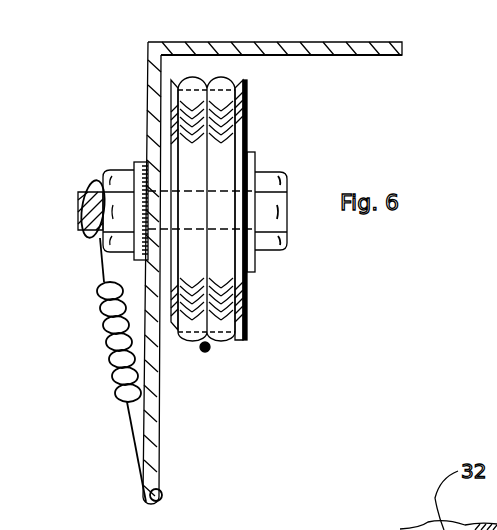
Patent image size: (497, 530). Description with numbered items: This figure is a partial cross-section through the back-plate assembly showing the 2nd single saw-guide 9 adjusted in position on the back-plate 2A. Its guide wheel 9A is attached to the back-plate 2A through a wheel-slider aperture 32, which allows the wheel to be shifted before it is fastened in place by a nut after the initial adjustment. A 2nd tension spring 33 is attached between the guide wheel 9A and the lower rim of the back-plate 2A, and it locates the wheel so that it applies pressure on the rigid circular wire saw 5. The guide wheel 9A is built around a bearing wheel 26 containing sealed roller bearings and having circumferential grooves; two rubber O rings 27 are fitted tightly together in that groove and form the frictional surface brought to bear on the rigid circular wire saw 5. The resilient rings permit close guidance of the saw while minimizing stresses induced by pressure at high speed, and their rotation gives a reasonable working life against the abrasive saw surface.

The back-plate 2A is at (147, 42).
The wheel-slider aperture 32 is at (141, 160).
The 2nd tension spring 33 is at (93, 291).
The bearing wheel 26 is at (247, 328).
The rubber O rings 27 is at (200, 342).
The guide wheel 9A is at (247, 103).
The 2nd single saw-guide 9 is at (270, 171).
The rigid circular wire saw 5 is at (207, 350).